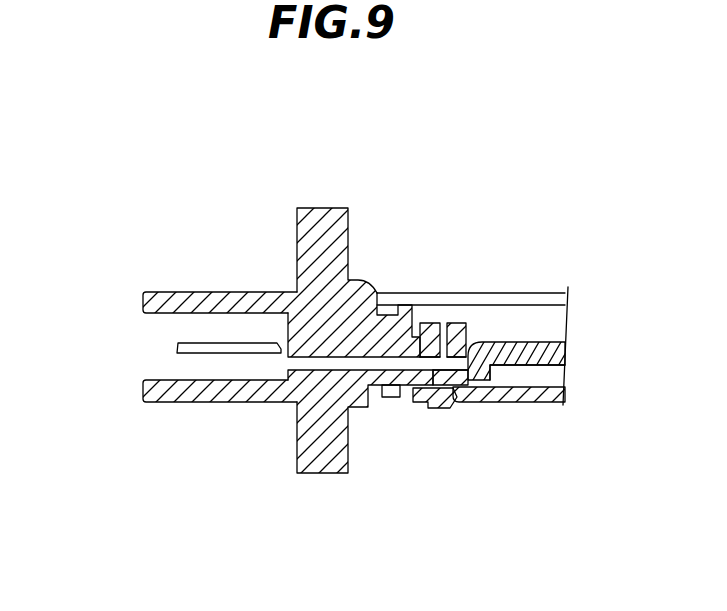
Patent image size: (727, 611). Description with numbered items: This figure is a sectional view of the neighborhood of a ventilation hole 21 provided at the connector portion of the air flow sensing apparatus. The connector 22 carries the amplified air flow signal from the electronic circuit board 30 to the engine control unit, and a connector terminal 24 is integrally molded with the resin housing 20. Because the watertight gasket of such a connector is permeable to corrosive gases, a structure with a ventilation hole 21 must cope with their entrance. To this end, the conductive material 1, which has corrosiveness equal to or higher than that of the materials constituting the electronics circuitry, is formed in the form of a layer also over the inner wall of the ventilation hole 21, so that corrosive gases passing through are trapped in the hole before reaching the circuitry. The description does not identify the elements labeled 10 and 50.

The conductive material 1 is at (320, 354).
The pipe 10 is at (527, 407).
The resin housing 20 is at (370, 280).
The ventilation hole 21 is at (287, 365).
The connector 22 is at (181, 301).
The connector terminal 24 is at (177, 347).
The electronic circuit board 30 is at (545, 368).
The retainer 50 is at (460, 408).